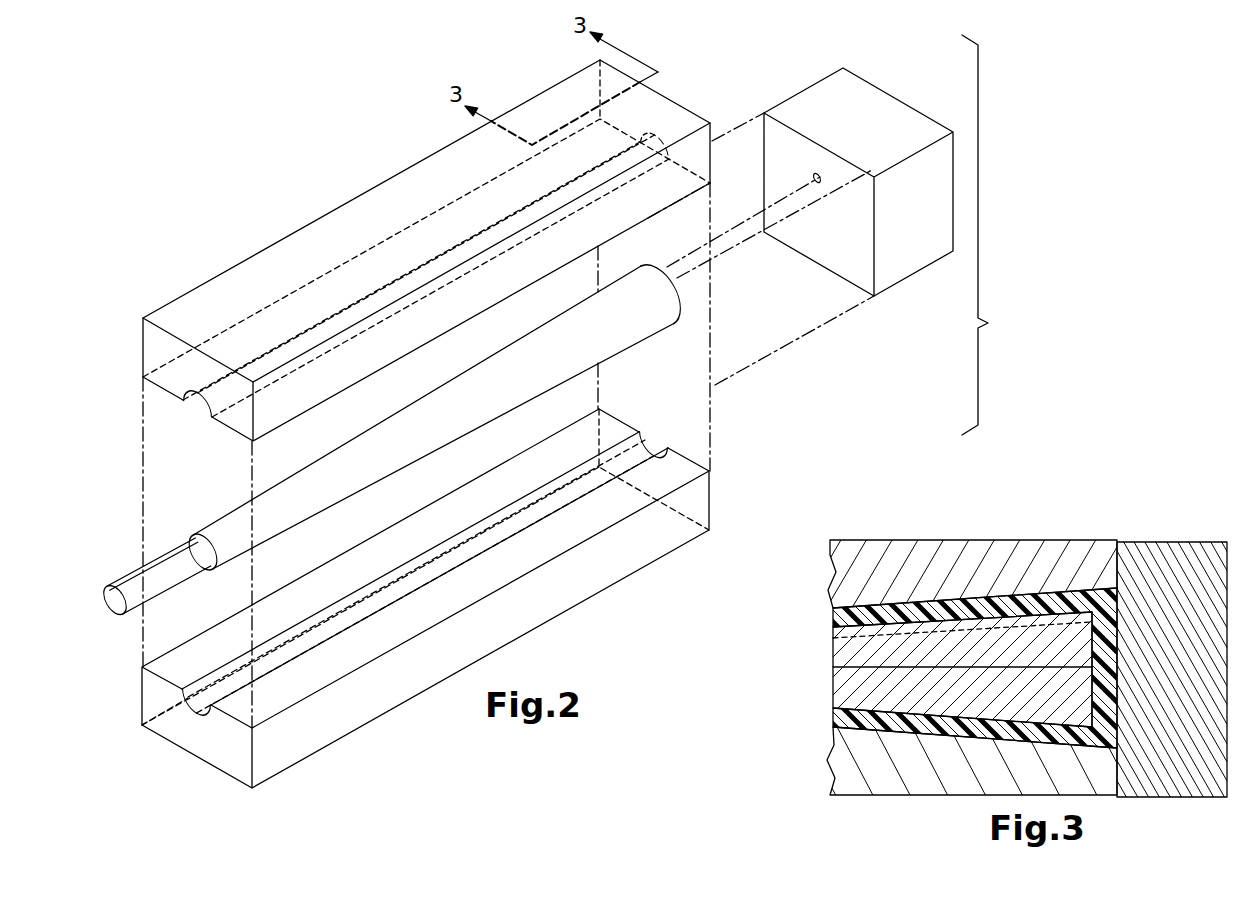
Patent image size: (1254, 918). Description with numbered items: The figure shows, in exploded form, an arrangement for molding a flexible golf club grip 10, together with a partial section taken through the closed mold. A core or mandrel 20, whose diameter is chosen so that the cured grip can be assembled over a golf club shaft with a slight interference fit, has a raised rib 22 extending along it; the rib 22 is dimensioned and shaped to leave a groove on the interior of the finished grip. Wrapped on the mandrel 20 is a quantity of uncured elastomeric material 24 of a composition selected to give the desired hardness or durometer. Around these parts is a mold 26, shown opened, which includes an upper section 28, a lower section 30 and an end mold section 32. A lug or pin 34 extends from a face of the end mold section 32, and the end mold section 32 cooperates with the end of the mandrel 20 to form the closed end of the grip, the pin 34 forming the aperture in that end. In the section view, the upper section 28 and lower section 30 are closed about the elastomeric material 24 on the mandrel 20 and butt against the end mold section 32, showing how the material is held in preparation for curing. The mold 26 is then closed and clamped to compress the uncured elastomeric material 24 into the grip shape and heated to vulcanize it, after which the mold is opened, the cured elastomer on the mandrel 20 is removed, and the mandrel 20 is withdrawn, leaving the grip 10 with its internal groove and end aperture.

In FIG. 2, the grip 10 is at (498, 413).
In FIG. 2, the mandrel 20 is at (121, 580).
In FIG. 3, the mandrel 20 is at (830, 652).
In FIG. 2, the rib 22 is at (160, 558).
In FIG. 2, the elastomeric material 24 is at (638, 311).
In FIG. 3, the elastomeric material 24 is at (930, 602).
In FIG. 2, the mold 26 is at (994, 235).
In FIG. 2, the upper section 28 is at (278, 242).
In FIG. 3, the upper section 28 is at (870, 540).
In FIG. 2, the lower section 30 is at (528, 632).
In FIG. 3, the lower section 30 is at (830, 758).
In FIG. 2, the end mold section 32 is at (907, 105).
In FIG. 3, the end mold section 32 is at (1177, 543).
In FIG. 2, the pin 34 is at (819, 176).
In FIG. 3, the pin 34 is at (1098, 607).